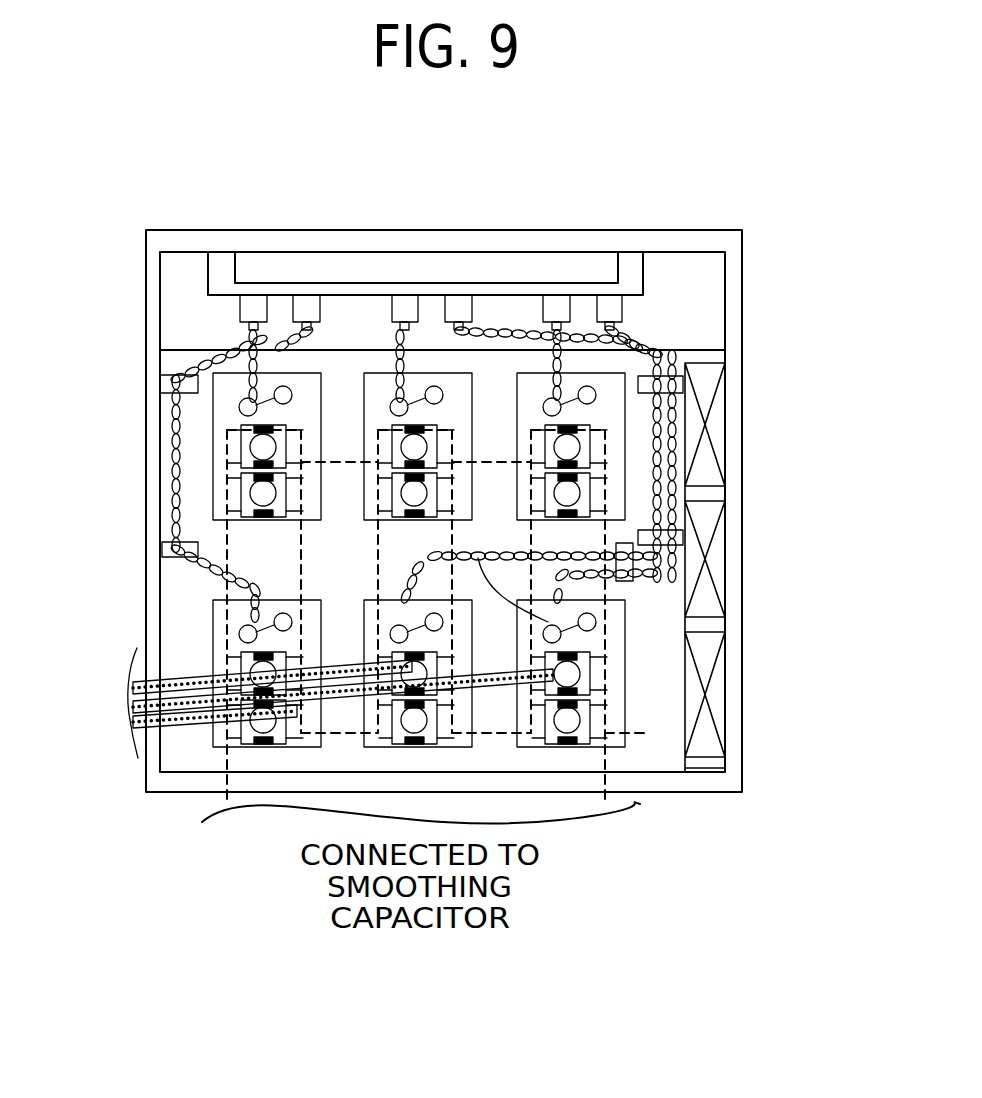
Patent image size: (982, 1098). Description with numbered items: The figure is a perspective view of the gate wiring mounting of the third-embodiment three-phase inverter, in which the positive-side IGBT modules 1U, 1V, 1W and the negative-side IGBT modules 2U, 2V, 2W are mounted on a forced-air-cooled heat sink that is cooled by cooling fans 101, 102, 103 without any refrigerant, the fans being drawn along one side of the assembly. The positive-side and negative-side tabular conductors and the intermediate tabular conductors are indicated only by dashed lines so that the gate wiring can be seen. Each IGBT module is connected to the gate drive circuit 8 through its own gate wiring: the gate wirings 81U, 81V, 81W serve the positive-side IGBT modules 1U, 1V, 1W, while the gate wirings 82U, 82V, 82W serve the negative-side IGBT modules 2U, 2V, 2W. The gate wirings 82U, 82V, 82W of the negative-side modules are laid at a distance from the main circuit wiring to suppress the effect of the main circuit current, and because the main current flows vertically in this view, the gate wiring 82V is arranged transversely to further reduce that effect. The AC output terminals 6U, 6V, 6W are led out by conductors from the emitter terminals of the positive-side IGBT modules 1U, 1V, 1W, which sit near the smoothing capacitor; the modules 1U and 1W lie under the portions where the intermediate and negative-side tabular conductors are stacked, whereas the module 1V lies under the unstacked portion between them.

The gate drive circuit 8 is at (530, 283).
The negative-side IGBT module 2U is at (307, 410).
The negative-side IGBT module 2V is at (463, 407).
The negative-side IGBT module 2W is at (604, 408).
The positive-side IGBT module 1U is at (298, 740).
The positive-side IGBT module 1V is at (443, 737).
The positive-side IGBT module 1W is at (616, 722).
The gate wiring 82U is at (248, 383).
The gate wiring 82V is at (392, 388).
The gate wiring 82W is at (618, 350).
The gate wiring 81U is at (176, 468).
The gate wiring 81V is at (635, 560).
The gate wiring 81W is at (658, 566).
The AC output terminal 6U is at (203, 680).
The AC output terminal 6V is at (165, 692).
The AC output terminal 6W is at (185, 738).
The cooling fan 101 is at (709, 395).
The cooling fan 102 is at (716, 527).
The cooling fan 103 is at (713, 739).